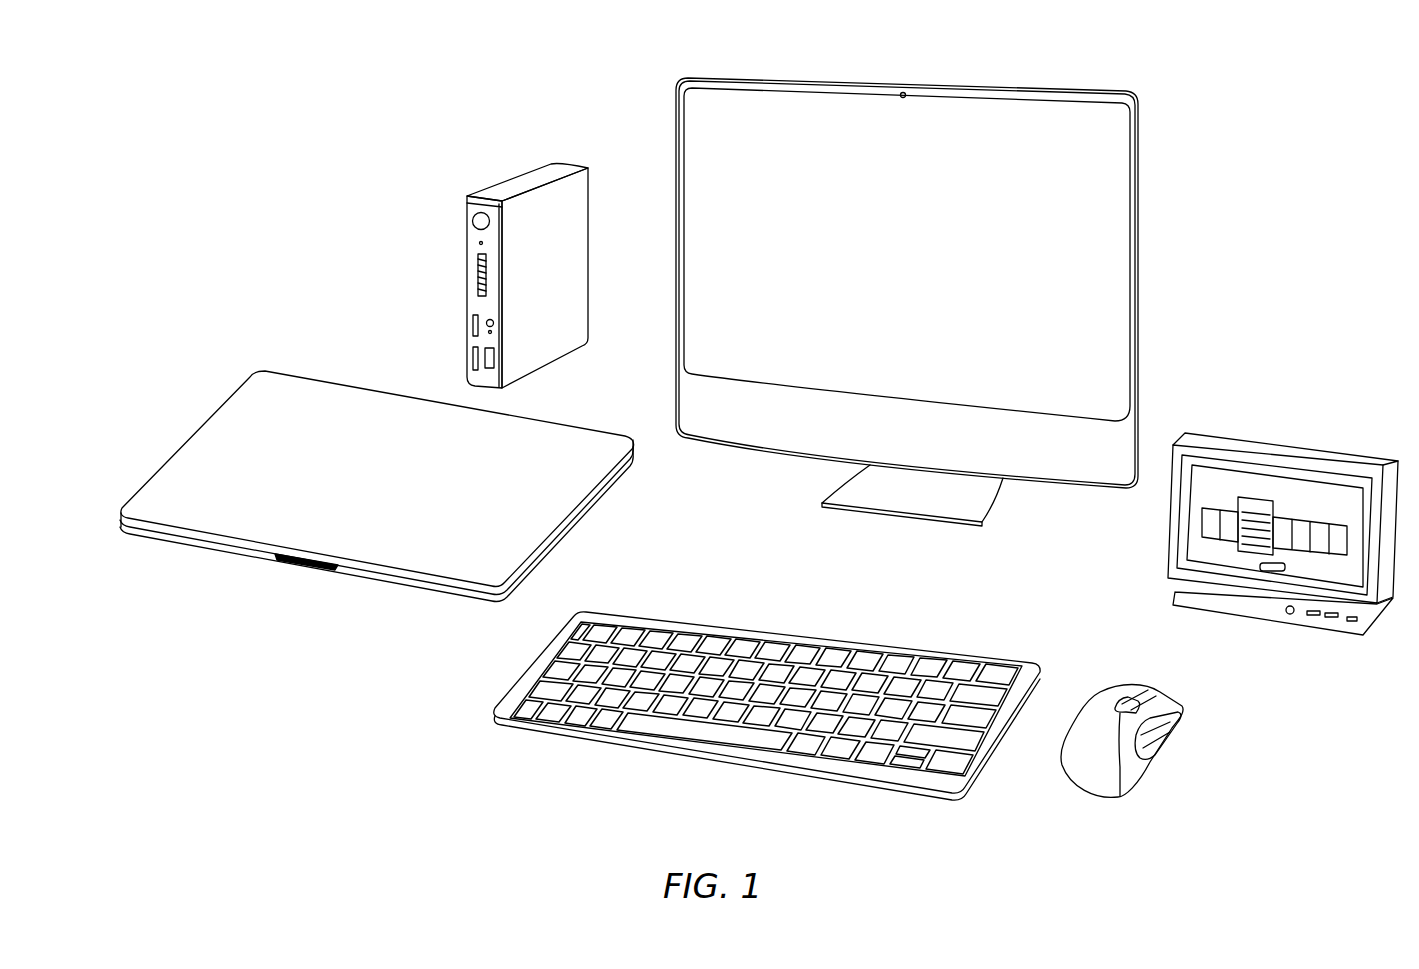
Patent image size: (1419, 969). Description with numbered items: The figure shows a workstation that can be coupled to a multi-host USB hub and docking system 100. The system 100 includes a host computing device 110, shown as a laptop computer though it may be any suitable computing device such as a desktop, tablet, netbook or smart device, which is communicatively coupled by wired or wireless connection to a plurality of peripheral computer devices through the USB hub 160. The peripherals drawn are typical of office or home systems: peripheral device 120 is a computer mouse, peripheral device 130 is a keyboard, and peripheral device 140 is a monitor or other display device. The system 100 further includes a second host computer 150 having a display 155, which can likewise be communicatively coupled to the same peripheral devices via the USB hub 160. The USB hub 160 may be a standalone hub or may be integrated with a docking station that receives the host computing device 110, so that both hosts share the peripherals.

The multi-host USB hub and docking system 100 is at (303, 100).
The host computing device 110 is at (332, 400).
The peripheral device 120 is at (1083, 798).
The peripheral device 130 is at (735, 760).
The peripheral device 140 is at (790, 79).
The second host computer 150 is at (1315, 460).
The display 155 is at (1293, 548).
The USB hub 160 is at (548, 172).